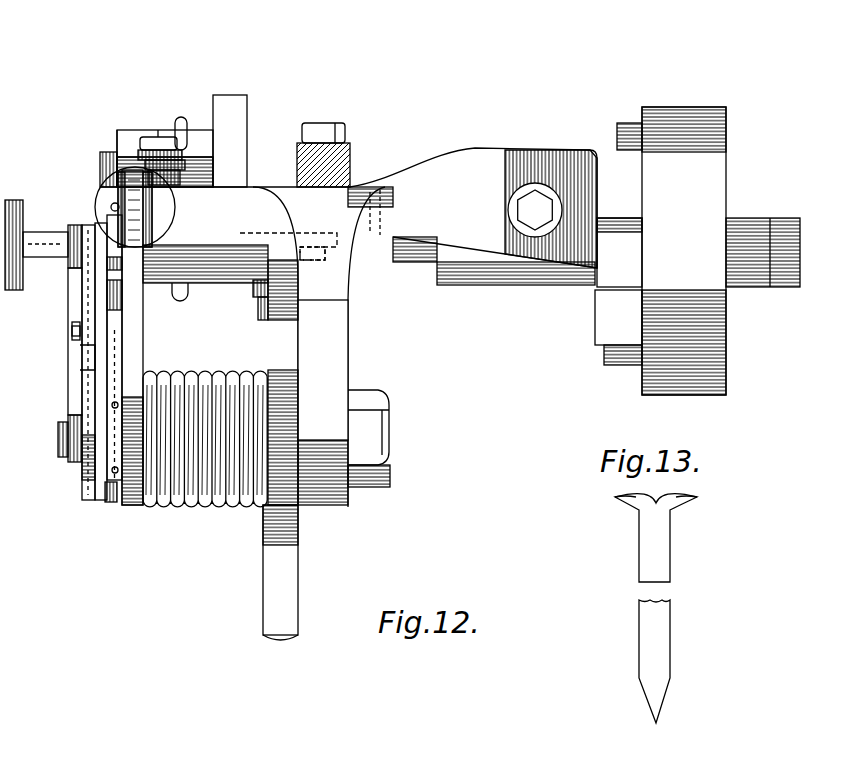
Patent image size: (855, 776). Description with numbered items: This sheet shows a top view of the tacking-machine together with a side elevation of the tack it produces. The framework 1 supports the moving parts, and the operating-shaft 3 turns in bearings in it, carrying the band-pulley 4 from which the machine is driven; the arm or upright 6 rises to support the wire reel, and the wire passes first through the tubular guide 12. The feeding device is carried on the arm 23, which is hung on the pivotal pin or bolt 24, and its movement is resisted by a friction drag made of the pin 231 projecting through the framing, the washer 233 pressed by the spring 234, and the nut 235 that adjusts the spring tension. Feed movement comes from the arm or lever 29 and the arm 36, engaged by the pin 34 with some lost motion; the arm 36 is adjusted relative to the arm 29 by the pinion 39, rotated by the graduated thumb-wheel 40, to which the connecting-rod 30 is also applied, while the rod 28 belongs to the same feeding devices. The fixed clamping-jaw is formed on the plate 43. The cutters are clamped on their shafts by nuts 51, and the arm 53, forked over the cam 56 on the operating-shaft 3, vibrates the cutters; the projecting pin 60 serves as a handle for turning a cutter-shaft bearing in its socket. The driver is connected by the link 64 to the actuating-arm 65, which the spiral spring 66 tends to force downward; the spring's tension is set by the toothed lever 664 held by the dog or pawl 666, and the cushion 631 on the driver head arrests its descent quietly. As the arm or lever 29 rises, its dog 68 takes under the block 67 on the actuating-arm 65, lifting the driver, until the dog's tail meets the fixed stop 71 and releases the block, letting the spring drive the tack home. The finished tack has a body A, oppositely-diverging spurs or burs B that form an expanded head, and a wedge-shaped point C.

In FIG. 12, the framework 1 is at (507, 165).
In FIG. 12, the operating-shaft 3 is at (425, 270).
In FIG. 12, the band-pulley 4 is at (697, 251).
In FIG. 12, the arm or upright 6 is at (352, 158).
In FIG. 12, the tubular guide 12 is at (110, 207).
In FIG. 12, the arm 23 is at (205, 240).
In FIG. 12, the pivotal pin or bolt 24 is at (320, 255).
In FIG. 12, the rod 28 is at (80, 343).
In FIG. 12, the arm or lever 29 is at (97, 482).
In FIG. 12, the connecting-rod 30 is at (88, 250).
In FIG. 12, the pin 34 is at (77, 333).
In FIG. 12, the arm 36 is at (72, 465).
In FIG. 12, the pinion 39 is at (74, 232).
In FIG. 12, the thumb-wheel 40 is at (28, 186).
In FIG. 12, the plate 43 is at (117, 150).
In FIG. 12, the nut 51 is at (100, 165).
In FIG. 12, the arm 53 is at (260, 300).
In FIG. 12, the cam 56 is at (256, 290).
In FIG. 12, the projecting pin 60 is at (182, 117).
In FIG. 12, the link 64 is at (118, 183).
In FIG. 12, the actuating-arm 65 is at (133, 505).
In FIG. 12, the spiral spring 66 is at (232, 372).
In FIG. 12, the block 67 is at (110, 262).
In FIG. 12, the dog 68 is at (108, 268).
In FIG. 12, the fixed stop 71 is at (112, 502).
In FIG. 12, the pin 231 is at (158, 130).
In FIG. 12, the washer 233 is at (175, 209).
In FIG. 12, the spring 234 is at (177, 170).
In FIG. 12, the nut 235 is at (148, 137).
In FIG. 12, the cushion 631 is at (165, 213).
In FIG. 12, the lever 664 is at (287, 573).
In FIG. 12, the dog or pawl 666 is at (287, 327).
In FIG. 13, the body of the nail A is at (672, 548).
In FIG. 13, the spurs or burs B is at (703, 496).
In FIG. 13, the point C is at (642, 700).